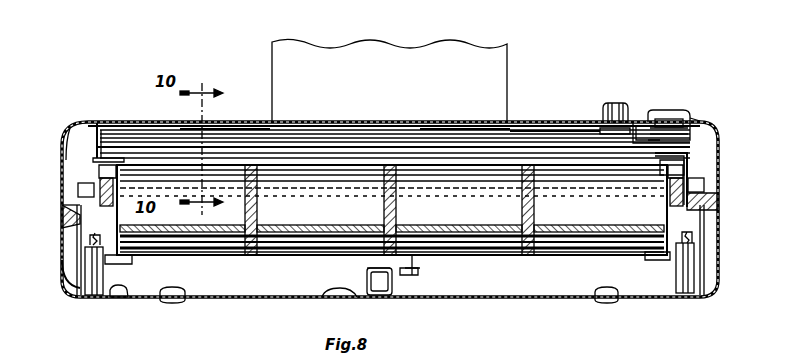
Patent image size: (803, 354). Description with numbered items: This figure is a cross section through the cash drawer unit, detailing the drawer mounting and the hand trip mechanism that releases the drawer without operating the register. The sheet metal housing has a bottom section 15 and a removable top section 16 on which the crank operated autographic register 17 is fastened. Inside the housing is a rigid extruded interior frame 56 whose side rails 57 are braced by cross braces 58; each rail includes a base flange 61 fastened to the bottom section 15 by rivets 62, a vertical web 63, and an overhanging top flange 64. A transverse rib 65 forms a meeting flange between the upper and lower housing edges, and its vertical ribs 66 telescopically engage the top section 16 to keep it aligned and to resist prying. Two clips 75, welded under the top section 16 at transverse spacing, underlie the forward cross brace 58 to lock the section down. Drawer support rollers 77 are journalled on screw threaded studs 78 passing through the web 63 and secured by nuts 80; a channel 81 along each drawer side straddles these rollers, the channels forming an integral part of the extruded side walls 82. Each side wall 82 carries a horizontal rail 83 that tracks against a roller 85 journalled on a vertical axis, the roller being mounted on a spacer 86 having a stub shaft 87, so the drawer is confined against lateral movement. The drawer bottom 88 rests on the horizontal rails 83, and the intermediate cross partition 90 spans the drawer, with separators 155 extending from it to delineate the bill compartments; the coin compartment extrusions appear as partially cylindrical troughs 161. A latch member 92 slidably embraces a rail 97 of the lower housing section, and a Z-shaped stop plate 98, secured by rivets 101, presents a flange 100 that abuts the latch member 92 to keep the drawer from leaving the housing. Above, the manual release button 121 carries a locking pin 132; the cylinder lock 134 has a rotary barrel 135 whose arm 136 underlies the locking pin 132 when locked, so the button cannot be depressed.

The bottom section 15 is at (505, 297).
The removable top section 16 is at (257, 122).
The autographic register 17 is at (512, 56).
The interior frame 56 is at (706, 262).
The side rails 57 is at (93, 158).
The cross braces 58 is at (135, 136).
The base flange 61 is at (118, 297).
The rivets 62 is at (602, 284).
The vertical web 63 is at (77, 232).
The overhanging top flange 64 is at (99, 130).
The transverse rib 65 is at (718, 205).
The vertical ribs 66 is at (78, 188).
The clips 75 is at (187, 130).
The drawer support rollers 77 is at (99, 170).
The screw threaded studs 78 is at (687, 165).
The nuts 80 is at (684, 165).
The channel 81 is at (113, 188).
The side walls 82 is at (117, 215).
The horizontal rail 83 is at (125, 264).
The roller 85 is at (85, 262).
The spacer 86 is at (80, 288).
The stub shaft 87 is at (727, 226).
The bottom 88 is at (392, 270).
The intermediate cross partition 90 is at (441, 175).
The latch member 92 is at (420, 268).
The rail 97 is at (392, 283).
The stop plate 98 is at (367, 274).
The flange 100 is at (418, 278).
The rivets 101 is at (340, 297).
The manual release button 121 is at (612, 103).
The locking pin 132 is at (633, 138).
The lock 134 is at (670, 110).
The rotary barrel 135 is at (700, 121).
The arm 136 is at (655, 120).
The separators 155 is at (257, 200).
The partially cylindrical trough 161 is at (350, 233).